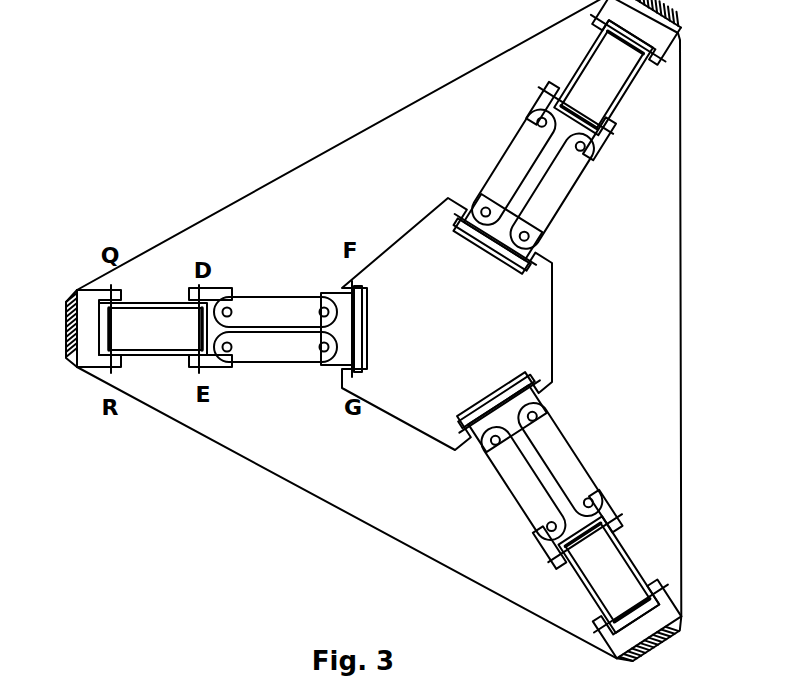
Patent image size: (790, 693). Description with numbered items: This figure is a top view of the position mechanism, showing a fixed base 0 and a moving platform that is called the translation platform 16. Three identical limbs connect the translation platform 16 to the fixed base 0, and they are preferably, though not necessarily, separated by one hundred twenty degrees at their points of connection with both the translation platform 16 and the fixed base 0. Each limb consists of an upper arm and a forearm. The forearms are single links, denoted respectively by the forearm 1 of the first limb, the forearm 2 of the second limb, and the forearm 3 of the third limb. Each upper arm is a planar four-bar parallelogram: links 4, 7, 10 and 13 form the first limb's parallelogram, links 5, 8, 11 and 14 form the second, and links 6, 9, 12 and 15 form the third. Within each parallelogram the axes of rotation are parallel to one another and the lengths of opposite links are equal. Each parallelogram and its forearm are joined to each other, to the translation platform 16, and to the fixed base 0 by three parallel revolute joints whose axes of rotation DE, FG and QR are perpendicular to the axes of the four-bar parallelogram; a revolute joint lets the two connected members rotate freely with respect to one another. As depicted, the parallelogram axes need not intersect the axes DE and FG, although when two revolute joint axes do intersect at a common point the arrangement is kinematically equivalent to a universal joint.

The fixed base 0 is at (317, 495).
The forearm 1 is at (138, 353).
The forearm 2 is at (630, 563).
The forearm 3 is at (632, 82).
The link 4 is at (217, 290).
The link 5 is at (602, 497).
The link 6 is at (602, 143).
The link 7 is at (263, 295).
The link 8 is at (507, 477).
The link 9 is at (577, 187).
The link 10 is at (257, 363).
The link 11 is at (567, 458).
The link 12 is at (505, 168).
The link 13 is at (333, 363).
The link 14 is at (540, 397).
The link 15 is at (473, 212).
The translation platform 16 is at (447, 324).